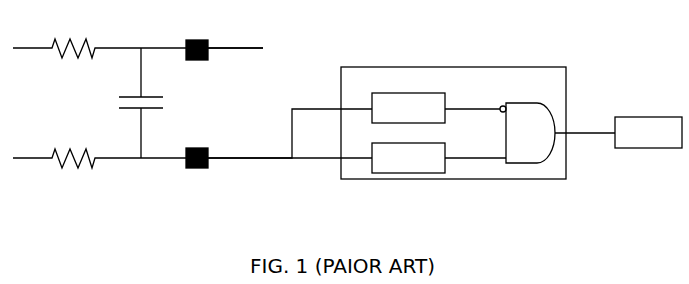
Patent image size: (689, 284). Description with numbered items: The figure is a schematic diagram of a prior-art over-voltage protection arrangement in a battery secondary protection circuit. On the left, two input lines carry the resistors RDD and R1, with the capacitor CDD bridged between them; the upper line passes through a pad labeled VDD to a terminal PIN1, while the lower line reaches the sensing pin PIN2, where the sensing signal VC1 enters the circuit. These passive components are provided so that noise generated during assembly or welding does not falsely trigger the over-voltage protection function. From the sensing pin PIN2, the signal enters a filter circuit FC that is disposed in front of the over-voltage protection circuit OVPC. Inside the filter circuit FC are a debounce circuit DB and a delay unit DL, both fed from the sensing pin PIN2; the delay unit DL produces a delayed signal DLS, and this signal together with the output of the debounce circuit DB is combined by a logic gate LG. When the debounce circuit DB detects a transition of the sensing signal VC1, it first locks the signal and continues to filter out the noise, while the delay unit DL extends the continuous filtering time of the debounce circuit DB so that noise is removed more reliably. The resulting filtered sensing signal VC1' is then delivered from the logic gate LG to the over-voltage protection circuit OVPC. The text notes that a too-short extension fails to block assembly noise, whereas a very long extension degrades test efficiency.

The resistor RDD is at (77, 37).
The supply voltage pad VDD is at (194, 39).
The first pin PIN1 is at (235, 61).
The capacitor CDD is at (162, 103).
The resistor R1 is at (77, 170).
The sensing signal VC1 is at (195, 171).
The sensing pin PIN2 is at (290, 133).
The filter circuit FC is at (372, 89).
The delay unit DL is at (396, 118).
The debounce circuit DB is at (396, 168).
The delayed signal DLS is at (475, 99).
The logic gate LG is at (518, 142).
The filtered sensing signal VC1' is at (585, 122).
The over-voltage protection circuit OVPC is at (623, 142).